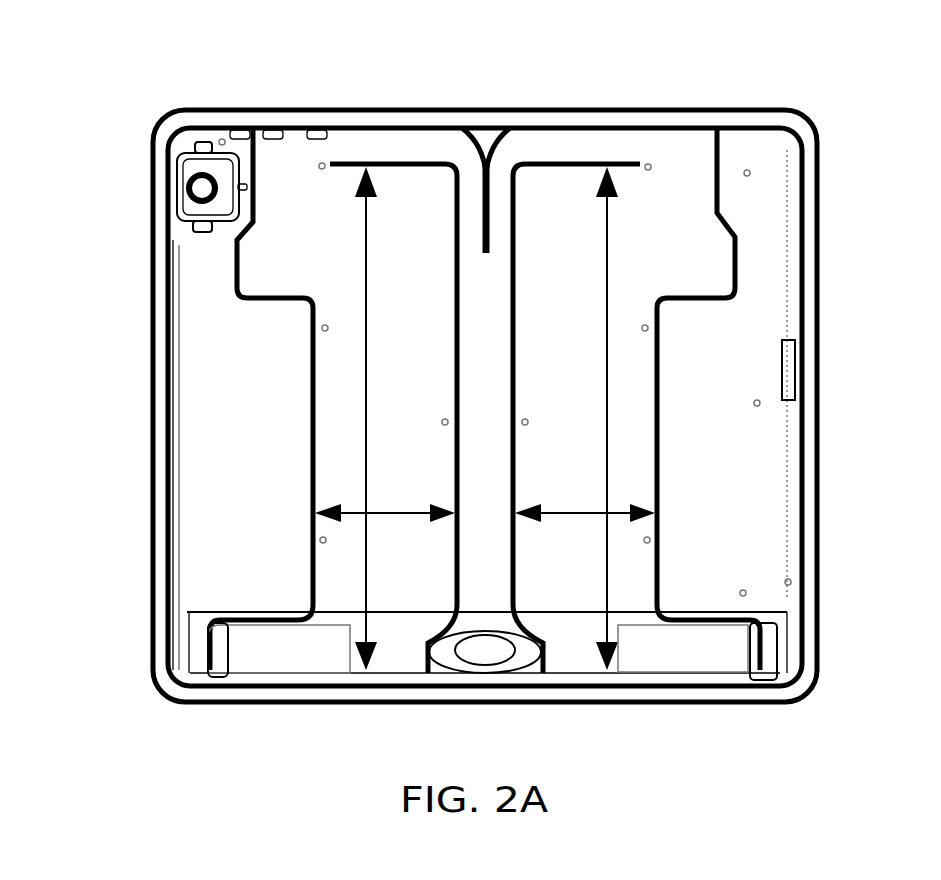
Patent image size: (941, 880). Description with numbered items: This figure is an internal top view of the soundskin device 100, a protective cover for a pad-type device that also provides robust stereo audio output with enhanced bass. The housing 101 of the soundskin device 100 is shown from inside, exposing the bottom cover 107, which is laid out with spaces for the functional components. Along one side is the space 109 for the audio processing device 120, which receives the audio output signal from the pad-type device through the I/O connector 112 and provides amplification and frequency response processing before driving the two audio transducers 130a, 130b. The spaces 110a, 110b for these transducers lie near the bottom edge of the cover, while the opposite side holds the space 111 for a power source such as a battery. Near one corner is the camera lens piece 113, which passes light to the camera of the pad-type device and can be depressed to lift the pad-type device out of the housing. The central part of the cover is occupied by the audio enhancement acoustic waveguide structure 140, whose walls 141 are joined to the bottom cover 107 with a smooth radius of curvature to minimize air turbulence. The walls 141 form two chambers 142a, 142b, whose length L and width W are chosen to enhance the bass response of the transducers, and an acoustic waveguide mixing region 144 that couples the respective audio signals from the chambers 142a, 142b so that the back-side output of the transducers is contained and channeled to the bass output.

The soundskin device 100 is at (150, 66).
The housing 101 is at (752, 115).
The bottom cover 107 is at (153, 513).
The space for audio processing device 109 is at (752, 325).
The space for audio transducer 110a is at (243, 667).
The space for audio transducer 110b is at (738, 643).
The space for power source 111 is at (210, 437).
The I/O connector 112 is at (797, 368).
The camera lens piece 113 is at (183, 195).
The audio processing device 120 is at (763, 423).
The audio transducer 130a is at (298, 657).
The audio transducer 130b is at (674, 655).
The acoustic waveguide structure 140 is at (423, 180).
The walls 141 is at (247, 223).
The chamber 142a is at (385, 418).
The chamber 142b is at (585, 418).
The acoustic waveguide mixing region 144 is at (486, 219).